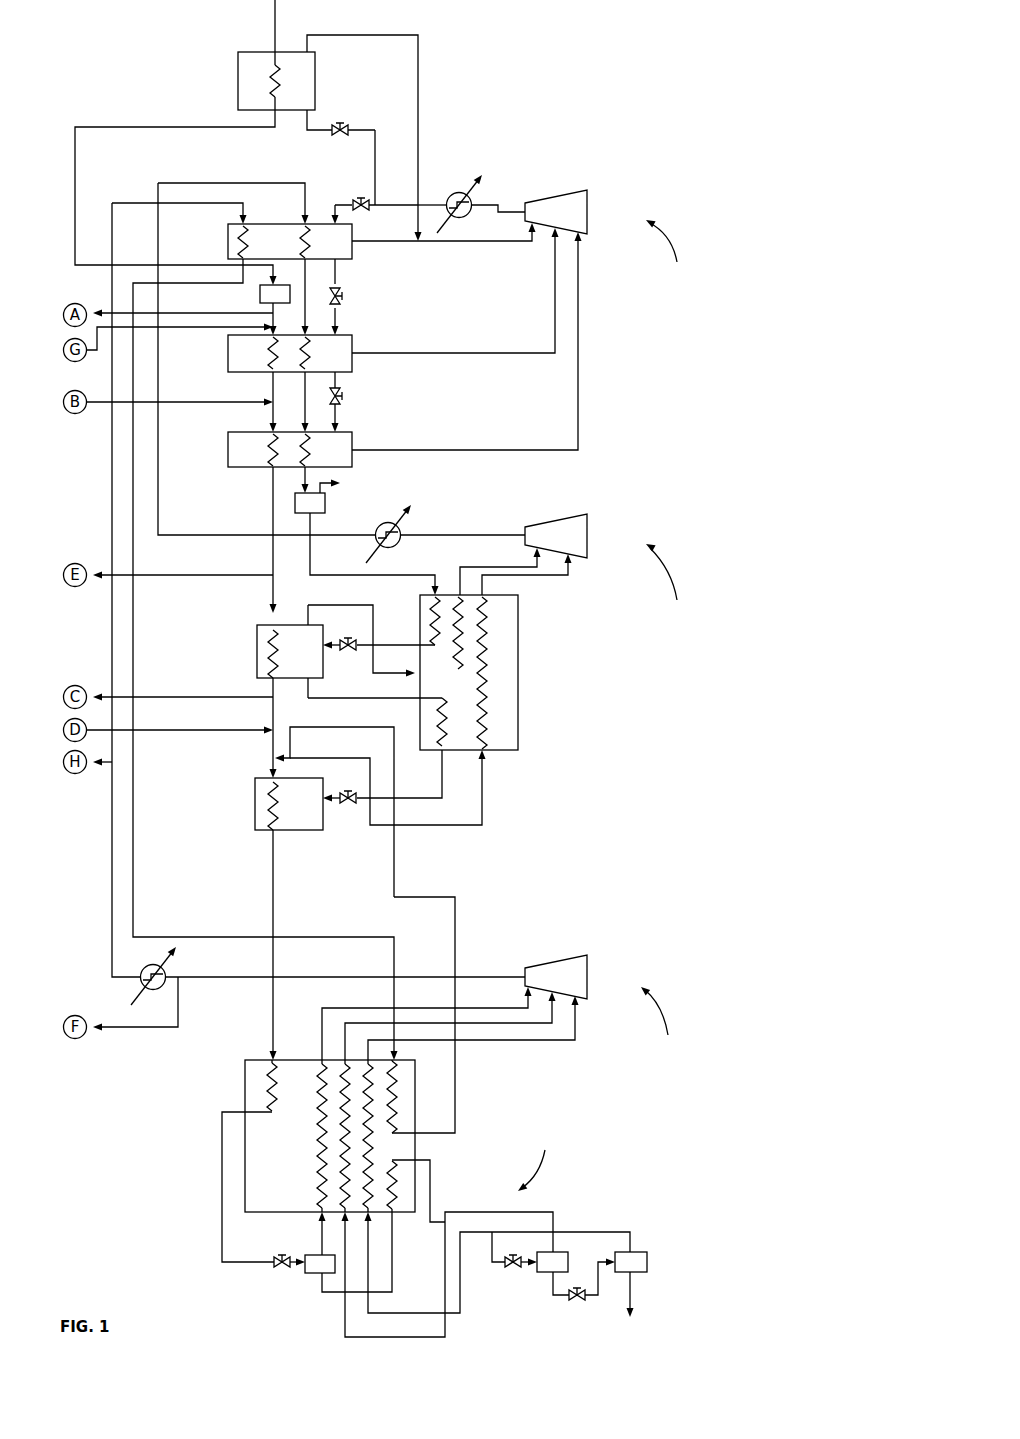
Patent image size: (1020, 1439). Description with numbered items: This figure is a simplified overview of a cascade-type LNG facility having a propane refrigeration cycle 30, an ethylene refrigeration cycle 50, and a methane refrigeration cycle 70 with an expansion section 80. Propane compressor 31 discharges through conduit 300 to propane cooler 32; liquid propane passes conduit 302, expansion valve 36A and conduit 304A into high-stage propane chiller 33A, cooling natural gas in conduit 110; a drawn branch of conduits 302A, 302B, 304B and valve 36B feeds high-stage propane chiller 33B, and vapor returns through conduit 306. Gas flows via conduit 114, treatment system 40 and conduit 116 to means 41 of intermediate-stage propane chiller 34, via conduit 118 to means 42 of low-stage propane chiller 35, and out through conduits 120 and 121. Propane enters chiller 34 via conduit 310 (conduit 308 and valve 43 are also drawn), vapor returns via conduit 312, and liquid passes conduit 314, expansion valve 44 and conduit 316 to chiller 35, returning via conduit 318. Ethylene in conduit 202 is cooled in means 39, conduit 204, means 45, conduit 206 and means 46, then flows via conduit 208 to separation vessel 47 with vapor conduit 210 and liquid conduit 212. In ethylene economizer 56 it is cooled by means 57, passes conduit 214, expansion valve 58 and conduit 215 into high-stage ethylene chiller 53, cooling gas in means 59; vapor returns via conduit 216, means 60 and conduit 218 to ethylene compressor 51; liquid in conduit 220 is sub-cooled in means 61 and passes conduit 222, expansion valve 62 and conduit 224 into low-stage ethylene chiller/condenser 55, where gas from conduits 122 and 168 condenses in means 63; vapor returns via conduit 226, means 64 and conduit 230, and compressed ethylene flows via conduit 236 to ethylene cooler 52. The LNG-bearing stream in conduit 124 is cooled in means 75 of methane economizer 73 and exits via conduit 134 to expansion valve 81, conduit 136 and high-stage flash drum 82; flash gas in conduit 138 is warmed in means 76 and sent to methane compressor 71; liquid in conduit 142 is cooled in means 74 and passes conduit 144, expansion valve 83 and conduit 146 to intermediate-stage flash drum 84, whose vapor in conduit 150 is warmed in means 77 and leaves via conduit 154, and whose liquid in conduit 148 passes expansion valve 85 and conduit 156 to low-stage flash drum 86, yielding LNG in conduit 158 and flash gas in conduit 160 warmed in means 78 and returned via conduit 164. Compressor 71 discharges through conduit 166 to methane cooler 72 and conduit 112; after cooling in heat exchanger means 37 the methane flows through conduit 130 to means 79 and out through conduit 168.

The conduit 110 is at (277, 10).
The high-stage propane chiller 33A is at (316, 64).
The expansion valve 36A is at (345, 122).
The conduit 304A is at (316, 133).
The line 302A is at (377, 148).
The conduit 302 is at (417, 200).
The line 304B is at (335, 200).
The valve 36B is at (361, 214).
The line 302B is at (372, 206).
The propane cooler/condenser 32 is at (452, 194).
The conduit 300 is at (483, 212).
The propane compressor 31 is at (548, 198).
The conduit 306 is at (438, 243).
The propane refrigeration cycle 30 is at (662, 255).
The heat exchanger means 37 is at (247, 226).
The high-stage propane chiller 33B is at (228, 241).
The indirect heat exchange means 39 is at (312, 242).
The conduit 112 is at (118, 202).
The conduit 130 is at (134, 276).
The conduit 202 is at (257, 538).
The conduit 114 is at (122, 127).
The conduit 116 is at (260, 297).
The treatment system 40 is at (286, 320).
The intermediate-stage propane chiller 34 is at (228, 347).
The indirect heat exchange means 41 is at (268, 351).
The indirect heat exchange means 45 is at (312, 351).
The line 308 is at (337, 276).
The valve 43 is at (345, 296).
The conduit 310 is at (338, 323).
The conduit 312 is at (430, 353).
The conduit 204 is at (306, 304).
The conduit 206 is at (303, 405).
The conduit 118 is at (270, 413).
The conduit 314 is at (340, 385).
The expansion valve 44 is at (345, 396).
The conduit 316 is at (340, 418).
The conduit 318 is at (427, 450).
The low-stage propane chiller 35 is at (228, 445).
The indirect heat exchange means 42 is at (268, 449).
The indirect heat exchange means 46 is at (312, 449).
The conduit 208 is at (303, 479).
The conduit 120 is at (271, 509).
The conduit 121 is at (270, 604).
The separation vessel 47 is at (325, 509).
The conduit 210 is at (342, 483).
The conduit 212 is at (320, 575).
The ethylene cooler 52 is at (390, 521).
The conduit 236 is at (421, 520).
The ethylene compressor 51 is at (547, 522).
The ethylene refrigeration cycle 50 is at (664, 575).
The conduit 218 is at (459, 567).
The conduit 230 is at (556, 578).
The ethylene economizer 56 is at (518, 711).
The indirect heat exchange means 57 is at (430, 625).
The indirect heat exchange means 60 is at (455, 656).
The indirect heat exchange means 64 is at (487, 683).
The indirect heat exchange means 61 is at (447, 719).
The conduit 216 is at (374, 609).
The conduit 215 is at (348, 640).
The expansion valve 58 is at (352, 652).
The conduit 214 is at (398, 674).
The conduit 220 is at (400, 699).
The high-stage ethylene chiller 53 is at (257, 653).
The indirect heat exchange means 59 is at (279, 656).
The conduit 122 is at (270, 689).
The conduit 168 is at (416, 895).
The conduit 226 is at (484, 793).
The conduit 222 is at (440, 776).
The expansion valve 62 is at (348, 806).
The conduit 224 is at (344, 793).
The low-stage ethylene chiller/condenser 55 is at (255, 807).
The indirect heat exchange means 63 is at (279, 809).
The conduit 124 is at (271, 883).
The methane cooler 72 is at (143, 967).
The conduit 166 is at (418, 975).
The methane compressor 71 is at (546, 962).
The conduit 138 is at (320, 1047).
The conduit 154 is at (470, 1030).
The conduit 164 is at (510, 1043).
The methane refrigeration cycle 70 is at (659, 1023).
The methane economizer 73 is at (245, 1077).
The indirect heat exchange means 75 is at (276, 1093).
The indirect heat exchange means 76 is at (317, 1133).
The indirect heat exchange means 77 is at (340, 1178).
The indirect heat exchange means 78 is at (375, 1151).
The indirect heat exchange means 79 is at (398, 1119).
The indirect heat exchange means 74 is at (398, 1174).
The conduit 144 is at (431, 1223).
The conduit 150 is at (489, 1212).
The conduit 160 is at (571, 1232).
The expansion section 80 is at (531, 1160).
The conduit 146 is at (516, 1268).
The intermediate-stage methane expansion valve 83 is at (510, 1270).
The intermediate-stage methane flash drum 84 is at (569, 1259).
The conduit 148 is at (552, 1300).
The low-stage methane expansion valve 85 is at (575, 1303).
The conduit 156 is at (599, 1298).
The low-stage methane flash drum 86 is at (637, 1250).
The conduit 158 is at (634, 1300).
The high-stage methane flash drum 82 is at (310, 1274).
The conduit 142 is at (394, 1276).
The conduit 136 is at (292, 1256).
The high-stage methane expansion valve 81 is at (275, 1268).
The conduit 134 is at (220, 1262).